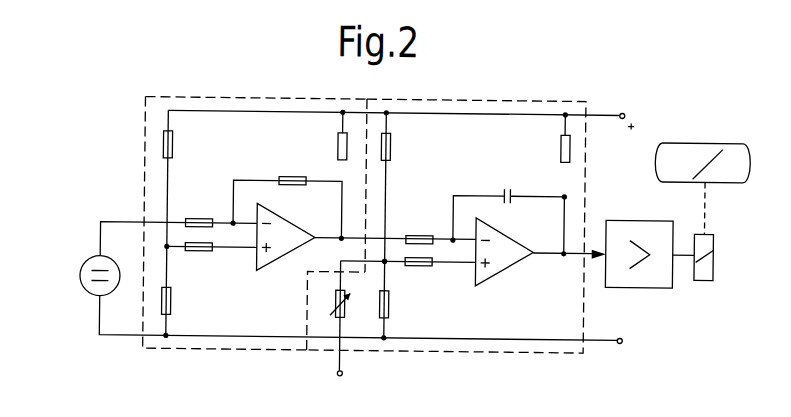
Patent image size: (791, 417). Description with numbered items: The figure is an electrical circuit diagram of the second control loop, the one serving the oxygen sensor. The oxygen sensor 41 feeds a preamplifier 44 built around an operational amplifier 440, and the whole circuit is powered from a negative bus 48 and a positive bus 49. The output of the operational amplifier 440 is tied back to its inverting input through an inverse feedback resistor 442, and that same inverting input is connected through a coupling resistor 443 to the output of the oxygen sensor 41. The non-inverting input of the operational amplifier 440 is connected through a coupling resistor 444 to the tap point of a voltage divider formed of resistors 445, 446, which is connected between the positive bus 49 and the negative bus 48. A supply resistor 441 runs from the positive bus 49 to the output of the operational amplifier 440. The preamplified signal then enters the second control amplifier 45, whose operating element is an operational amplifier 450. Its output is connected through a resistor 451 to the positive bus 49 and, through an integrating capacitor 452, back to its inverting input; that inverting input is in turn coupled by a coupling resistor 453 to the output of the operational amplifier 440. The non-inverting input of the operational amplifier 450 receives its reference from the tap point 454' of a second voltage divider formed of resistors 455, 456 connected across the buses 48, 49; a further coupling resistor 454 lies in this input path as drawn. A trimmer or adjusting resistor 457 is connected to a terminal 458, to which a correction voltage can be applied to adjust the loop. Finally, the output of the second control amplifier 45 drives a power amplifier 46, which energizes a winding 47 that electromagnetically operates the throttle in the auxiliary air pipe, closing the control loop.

The oxygen sensor 41 is at (80, 276).
The preamplifier 44 is at (244, 99).
The second control amplifier 45 is at (465, 99).
The power amplifier 46 is at (630, 285).
The winding 47 is at (704, 278).
The negative bus 48 is at (623, 340).
The positive bus 49 is at (624, 113).
The operational amplifier 440 is at (272, 257).
The supply resistor 441 is at (336, 144).
The inverse feedback resistor 442 is at (292, 178).
The coupling resistor 443 is at (198, 221).
The coupling resistor 444 is at (200, 253).
The voltage divider resistor 445 is at (172, 139).
The voltage divider resistor 446 is at (172, 305).
The operational amplifier 450 is at (500, 268).
The resistor 451 is at (560, 148).
The integrating capacitor 452 is at (507, 188).
The coupling resistor 453 is at (416, 236).
The input resistor 454 is at (420, 277).
The tap point 454' is at (428, 287).
The voltage divider resistor 455 is at (390, 140).
The voltage divider resistor 456 is at (390, 305).
The trimmer or adjusting resistor 457 is at (346, 303).
The terminal 458 is at (344, 374).